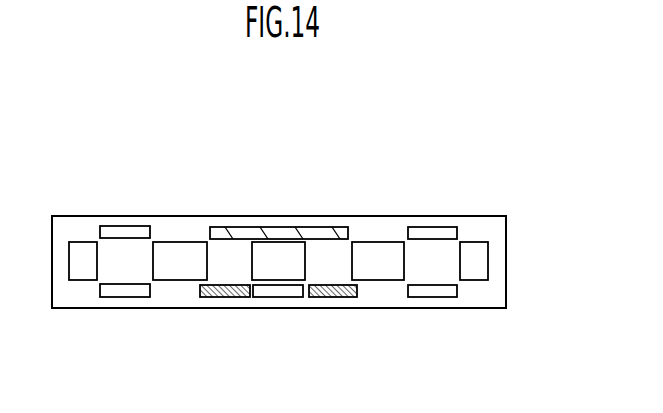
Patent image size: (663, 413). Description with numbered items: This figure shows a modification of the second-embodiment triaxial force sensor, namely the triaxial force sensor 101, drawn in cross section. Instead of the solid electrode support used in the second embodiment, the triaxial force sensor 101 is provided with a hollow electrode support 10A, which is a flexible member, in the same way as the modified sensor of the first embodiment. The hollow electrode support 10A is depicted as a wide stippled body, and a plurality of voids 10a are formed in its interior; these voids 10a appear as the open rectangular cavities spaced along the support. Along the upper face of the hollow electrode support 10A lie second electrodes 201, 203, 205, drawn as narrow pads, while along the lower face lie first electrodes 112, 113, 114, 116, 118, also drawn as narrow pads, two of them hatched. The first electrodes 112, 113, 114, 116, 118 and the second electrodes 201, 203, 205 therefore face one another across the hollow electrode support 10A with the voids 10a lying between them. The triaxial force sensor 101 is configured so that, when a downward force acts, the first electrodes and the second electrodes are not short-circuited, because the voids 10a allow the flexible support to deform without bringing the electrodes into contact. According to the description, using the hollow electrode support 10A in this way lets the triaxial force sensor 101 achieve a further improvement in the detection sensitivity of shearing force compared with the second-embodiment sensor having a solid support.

The triaxial force sensor 101 is at (402, 163).
The hollow electrode support 10A is at (85, 216).
The voids 10a is at (254, 272).
The second electrode 201 is at (240, 227).
The second electrode 203 is at (118, 226).
The second electrode 205 is at (440, 227).
The first electrode 112 is at (282, 297).
The first electrode 113 is at (228, 297).
The first electrode 114 is at (340, 297).
The first electrode 116 is at (129, 297).
The first electrode 118 is at (441, 297).